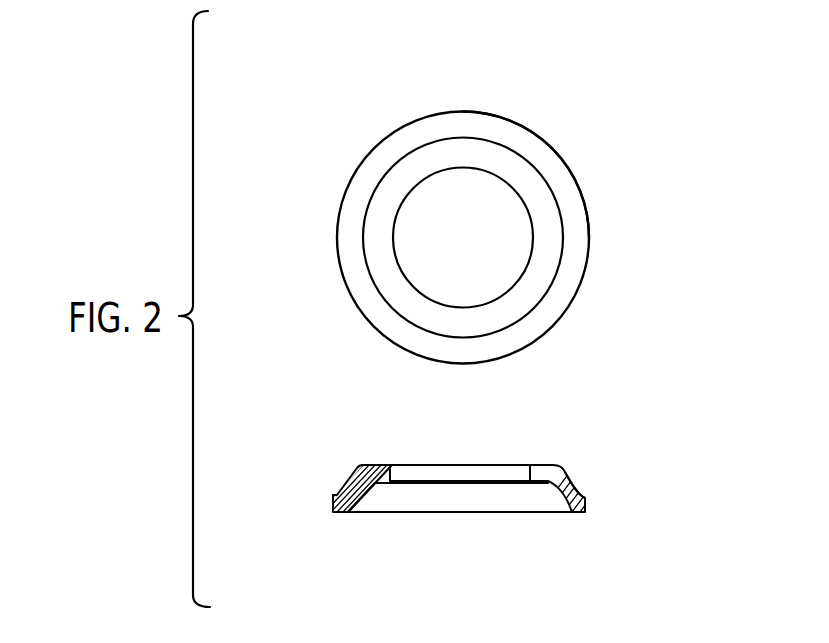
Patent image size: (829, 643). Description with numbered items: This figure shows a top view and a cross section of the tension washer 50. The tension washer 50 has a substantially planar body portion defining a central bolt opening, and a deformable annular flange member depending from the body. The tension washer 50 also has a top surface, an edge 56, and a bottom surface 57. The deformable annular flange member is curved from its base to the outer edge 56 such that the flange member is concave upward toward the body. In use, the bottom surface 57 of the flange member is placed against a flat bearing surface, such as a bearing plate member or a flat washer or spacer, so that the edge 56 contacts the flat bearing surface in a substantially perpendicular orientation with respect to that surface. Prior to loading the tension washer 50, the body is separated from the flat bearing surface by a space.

The tension washer 50 is at (690, 237).
The edge 56 is at (588, 500).
The bottom surface 57 is at (367, 483).